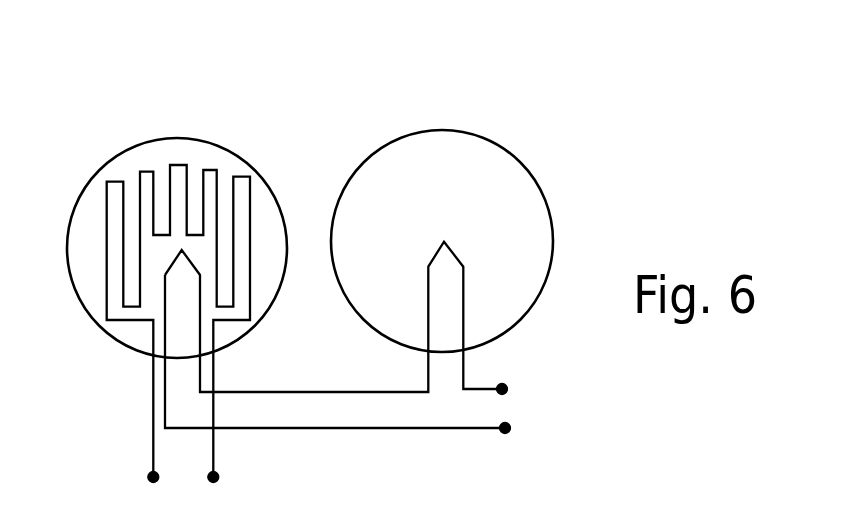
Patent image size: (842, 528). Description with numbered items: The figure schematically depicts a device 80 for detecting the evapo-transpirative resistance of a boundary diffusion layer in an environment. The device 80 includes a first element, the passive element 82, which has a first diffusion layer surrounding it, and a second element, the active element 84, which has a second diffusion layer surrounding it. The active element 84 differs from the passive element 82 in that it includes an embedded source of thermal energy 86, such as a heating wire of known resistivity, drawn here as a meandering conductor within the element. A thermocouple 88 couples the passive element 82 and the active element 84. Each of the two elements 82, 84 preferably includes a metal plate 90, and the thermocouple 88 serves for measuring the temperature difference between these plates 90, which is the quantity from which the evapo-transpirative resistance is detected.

The device 80 is at (340, 83).
The passive element 82 is at (503, 157).
The active element 84 is at (73, 208).
The source of thermal energy 86 is at (207, 166).
The thermocouple 88 is at (333, 398).
The metal plate 90 is at (162, 150).